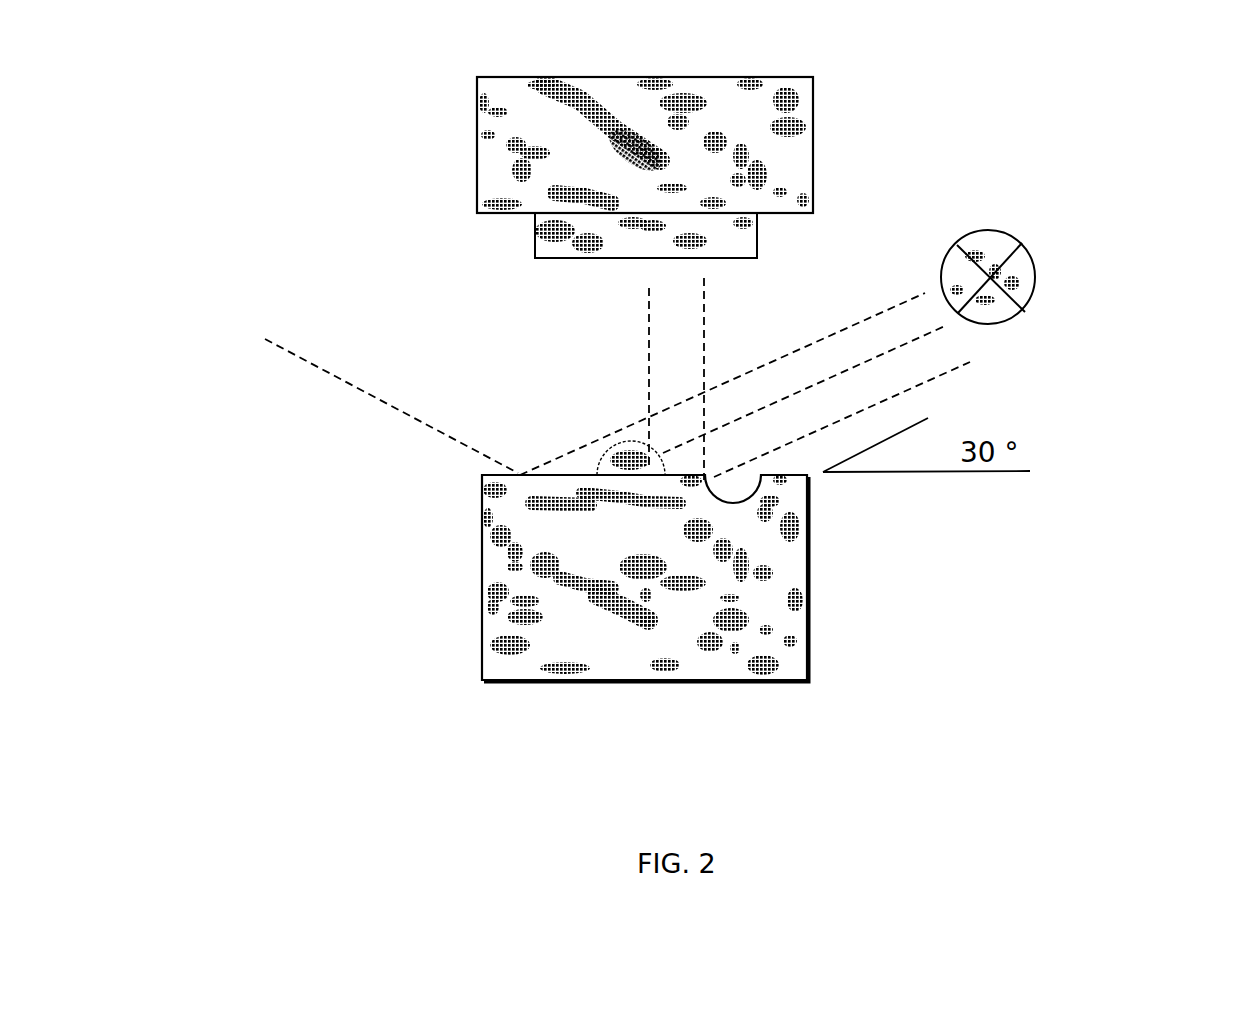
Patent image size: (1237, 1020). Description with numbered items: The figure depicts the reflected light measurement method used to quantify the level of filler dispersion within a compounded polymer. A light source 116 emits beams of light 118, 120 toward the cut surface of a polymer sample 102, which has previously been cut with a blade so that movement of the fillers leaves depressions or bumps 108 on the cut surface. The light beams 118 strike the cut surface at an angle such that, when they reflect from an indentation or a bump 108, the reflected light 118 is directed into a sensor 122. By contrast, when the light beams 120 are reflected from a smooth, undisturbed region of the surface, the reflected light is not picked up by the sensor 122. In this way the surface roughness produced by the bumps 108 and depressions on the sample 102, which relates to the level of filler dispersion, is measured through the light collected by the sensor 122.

The compounded polymer sample 102 is at (734, 578).
The bump 108 is at (578, 421).
The light source 116 is at (1042, 252).
The light beams 118 is at (928, 334).
The light beams 120 is at (581, 369).
The sensor 122 is at (714, 145).